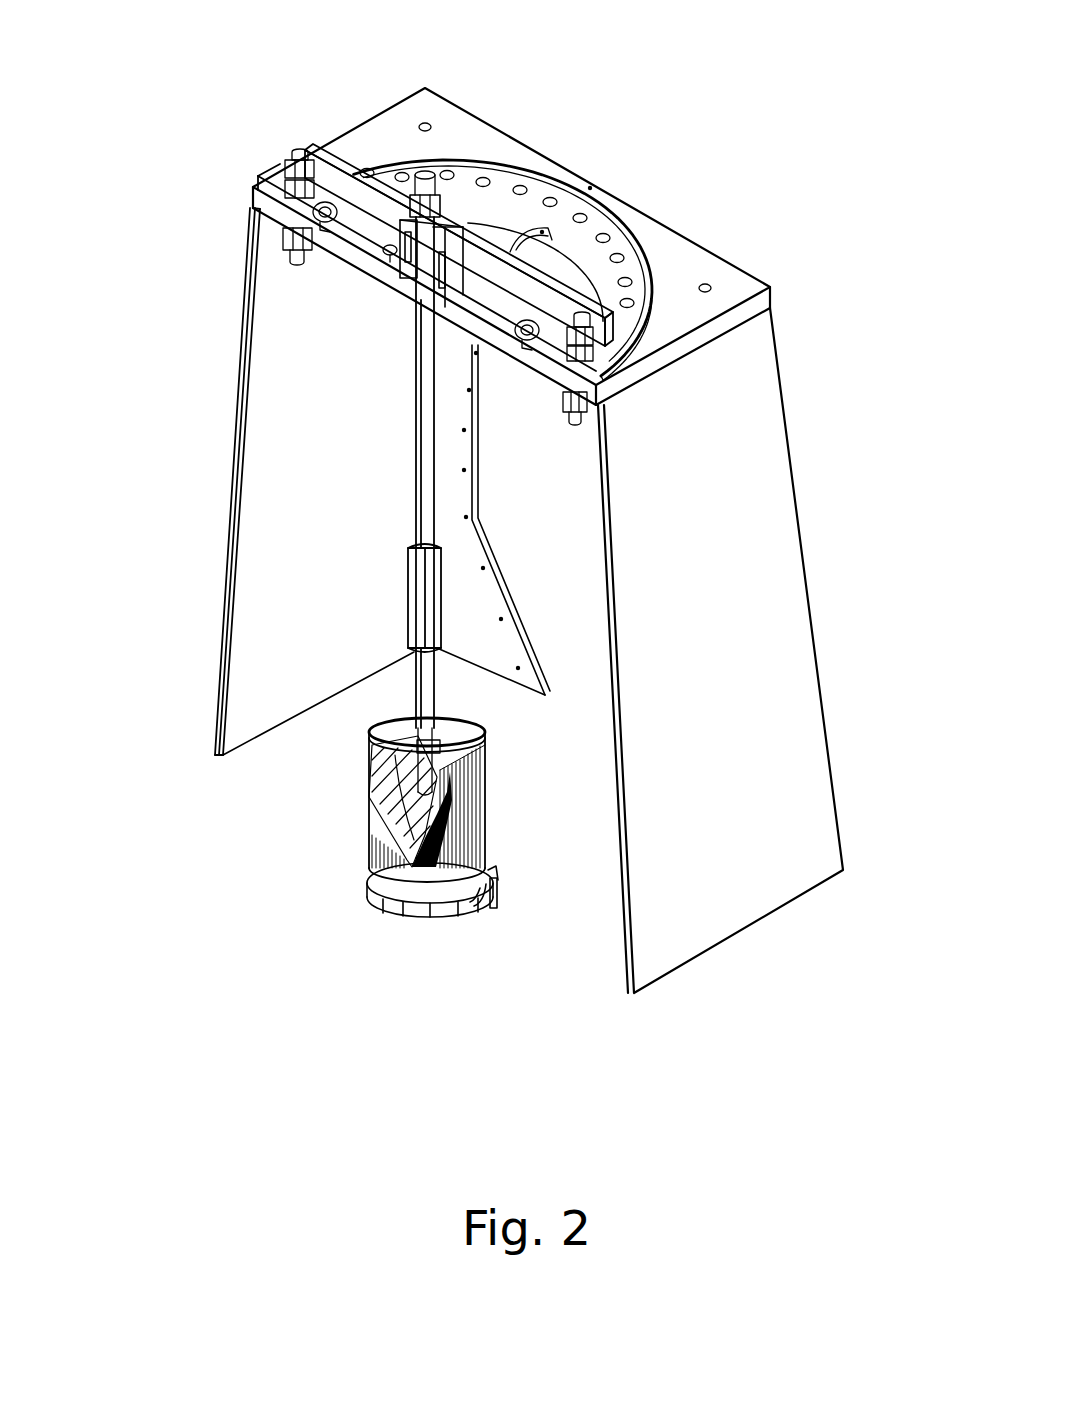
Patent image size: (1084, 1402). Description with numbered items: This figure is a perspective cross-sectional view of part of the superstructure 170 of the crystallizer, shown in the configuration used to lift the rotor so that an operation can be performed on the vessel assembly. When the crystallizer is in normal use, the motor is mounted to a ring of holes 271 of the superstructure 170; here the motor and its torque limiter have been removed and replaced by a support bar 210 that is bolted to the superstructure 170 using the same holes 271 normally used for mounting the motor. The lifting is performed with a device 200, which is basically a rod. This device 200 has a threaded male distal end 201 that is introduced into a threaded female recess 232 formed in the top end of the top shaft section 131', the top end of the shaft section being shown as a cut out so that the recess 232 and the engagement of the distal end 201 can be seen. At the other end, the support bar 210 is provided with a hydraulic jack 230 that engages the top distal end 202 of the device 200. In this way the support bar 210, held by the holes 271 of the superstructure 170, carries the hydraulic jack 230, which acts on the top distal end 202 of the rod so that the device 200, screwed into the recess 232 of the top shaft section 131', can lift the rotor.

The superstructure 170 is at (724, 198).
The device 200 is at (239, 382).
The threaded male distal end 201 is at (243, 669).
The top distal end 202 is at (430, 180).
The support bar 210 is at (353, 223).
The hydraulic jack 230 is at (440, 275).
The ring of holes 271 is at (583, 215).
The top shaft section 131' is at (263, 800).
The threaded female recess 232 is at (483, 830).